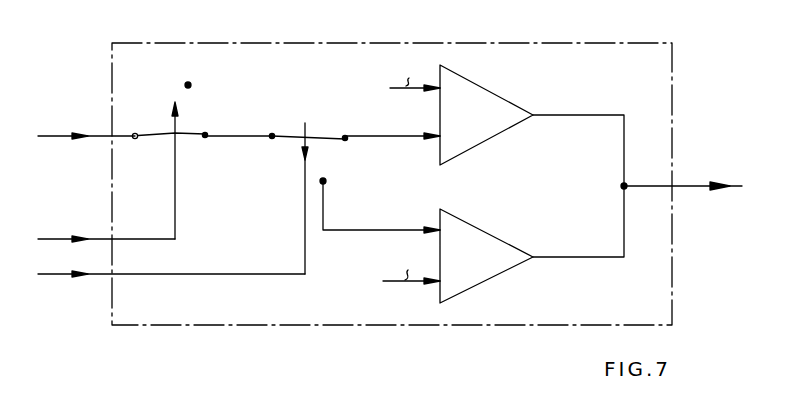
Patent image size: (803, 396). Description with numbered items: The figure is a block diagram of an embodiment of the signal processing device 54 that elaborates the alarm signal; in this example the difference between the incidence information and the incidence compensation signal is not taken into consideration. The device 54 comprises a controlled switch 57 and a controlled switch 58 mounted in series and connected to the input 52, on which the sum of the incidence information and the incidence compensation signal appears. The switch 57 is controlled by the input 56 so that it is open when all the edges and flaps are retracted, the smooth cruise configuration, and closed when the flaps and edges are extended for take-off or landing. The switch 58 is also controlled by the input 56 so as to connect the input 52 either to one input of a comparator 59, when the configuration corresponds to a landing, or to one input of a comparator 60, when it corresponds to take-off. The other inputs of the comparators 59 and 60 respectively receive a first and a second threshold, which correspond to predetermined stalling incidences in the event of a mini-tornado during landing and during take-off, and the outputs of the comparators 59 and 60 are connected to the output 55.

The input 52 is at (96, 133).
The signal processing device 54 is at (352, 312).
The output 55 is at (698, 183).
The input 56 is at (48, 240).
The controlled switch 57 is at (157, 120).
The controlled switch 58 is at (330, 130).
The comparator 59 is at (470, 79).
The comparator 60 is at (480, 285).